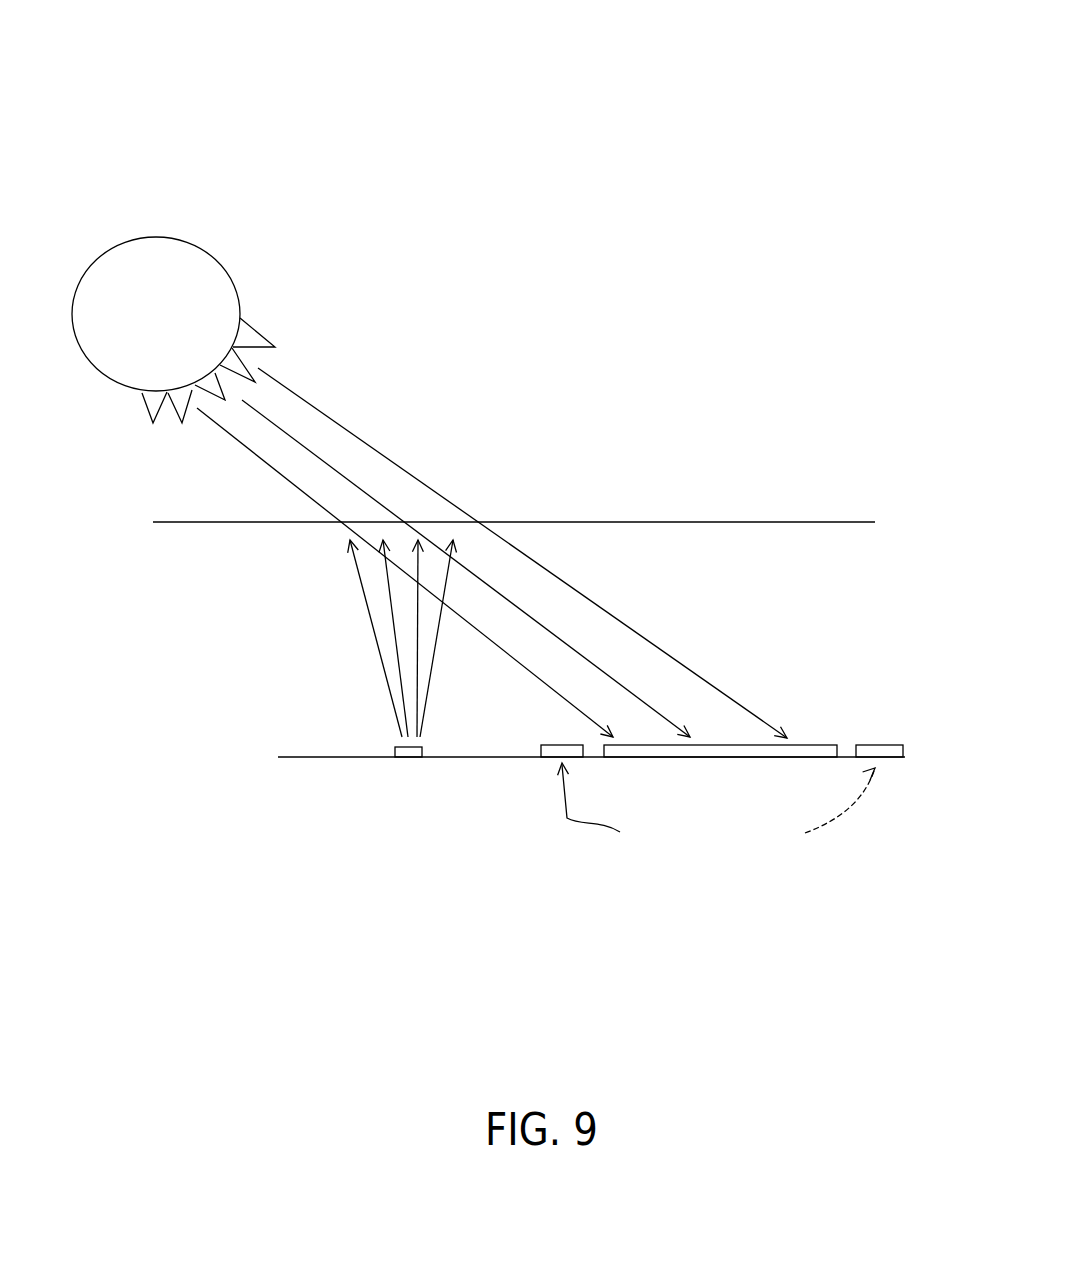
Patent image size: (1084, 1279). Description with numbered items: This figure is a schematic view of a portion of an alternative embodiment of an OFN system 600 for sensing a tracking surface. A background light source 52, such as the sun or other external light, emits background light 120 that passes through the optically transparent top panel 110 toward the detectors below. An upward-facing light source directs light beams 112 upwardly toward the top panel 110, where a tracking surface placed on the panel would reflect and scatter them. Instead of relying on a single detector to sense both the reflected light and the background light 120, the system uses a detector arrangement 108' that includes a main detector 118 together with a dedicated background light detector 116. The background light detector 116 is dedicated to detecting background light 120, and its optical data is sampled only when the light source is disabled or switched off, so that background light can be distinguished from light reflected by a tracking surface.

The OFN system 600 is at (597, 90).
The background light source 52 is at (195, 240).
The background light 120 is at (412, 473).
The top panel 110 is at (625, 522).
The light beams 112 is at (372, 622).
The main detector 118 is at (647, 795).
The background light detector 116 is at (663, 880).
The detector 108' is at (372, 910).